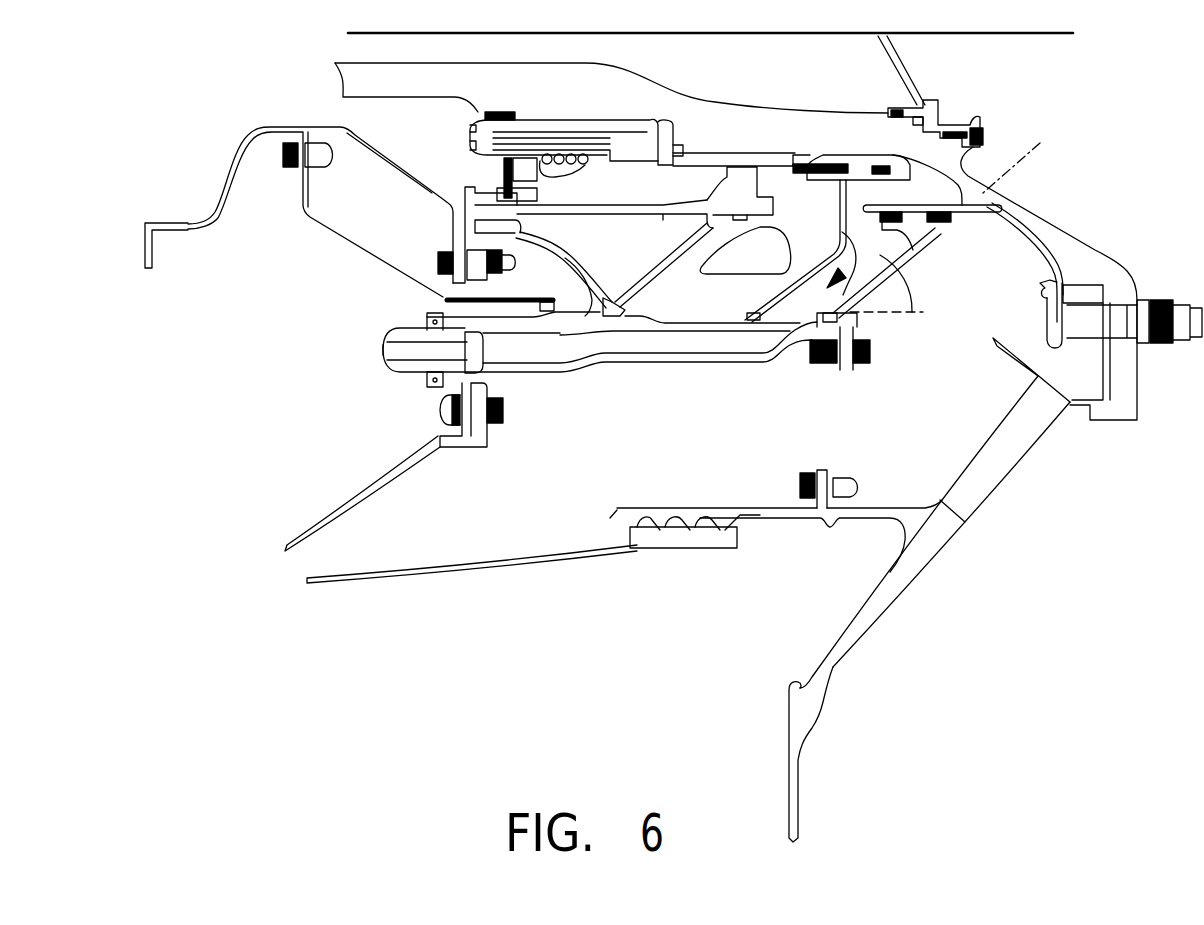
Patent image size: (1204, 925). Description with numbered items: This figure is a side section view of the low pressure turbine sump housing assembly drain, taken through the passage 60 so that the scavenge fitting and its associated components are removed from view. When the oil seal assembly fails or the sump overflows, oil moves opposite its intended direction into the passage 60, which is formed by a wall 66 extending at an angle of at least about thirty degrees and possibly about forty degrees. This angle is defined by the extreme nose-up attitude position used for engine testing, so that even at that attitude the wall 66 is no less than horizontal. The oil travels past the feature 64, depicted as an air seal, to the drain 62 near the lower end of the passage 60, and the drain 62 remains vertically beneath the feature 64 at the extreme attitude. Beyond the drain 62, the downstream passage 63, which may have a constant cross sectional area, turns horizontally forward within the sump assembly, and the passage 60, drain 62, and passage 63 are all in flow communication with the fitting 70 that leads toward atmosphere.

The passage 60 is at (841, 231).
The drain 62 is at (790, 318).
The downstream passage 63 is at (533, 353).
The feature 64 is at (987, 221).
The wall 66 is at (913, 250).
The fitting 70 is at (350, 356).